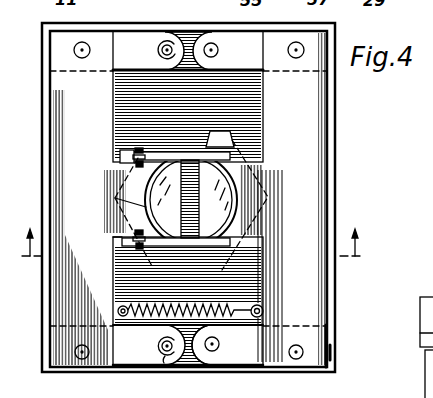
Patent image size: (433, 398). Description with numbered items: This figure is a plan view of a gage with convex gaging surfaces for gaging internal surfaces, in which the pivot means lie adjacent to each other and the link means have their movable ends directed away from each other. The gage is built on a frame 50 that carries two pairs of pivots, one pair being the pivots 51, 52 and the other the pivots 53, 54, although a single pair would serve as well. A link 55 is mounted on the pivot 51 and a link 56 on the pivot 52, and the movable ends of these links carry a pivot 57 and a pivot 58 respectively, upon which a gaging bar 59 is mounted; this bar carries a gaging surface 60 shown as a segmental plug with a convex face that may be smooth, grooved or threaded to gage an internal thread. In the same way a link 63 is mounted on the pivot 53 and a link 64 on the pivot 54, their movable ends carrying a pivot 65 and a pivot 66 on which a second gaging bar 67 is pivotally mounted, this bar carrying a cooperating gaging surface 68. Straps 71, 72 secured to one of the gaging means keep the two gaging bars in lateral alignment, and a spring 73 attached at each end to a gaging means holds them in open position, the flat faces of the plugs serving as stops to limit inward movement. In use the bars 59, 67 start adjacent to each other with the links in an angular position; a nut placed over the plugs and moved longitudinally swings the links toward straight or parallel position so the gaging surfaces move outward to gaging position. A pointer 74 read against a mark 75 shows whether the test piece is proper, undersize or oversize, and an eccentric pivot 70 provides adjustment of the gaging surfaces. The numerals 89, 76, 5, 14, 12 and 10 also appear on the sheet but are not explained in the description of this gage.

The frame 50 is at (335, 110).
The gaging means or bar 67 is at (306, 135).
The gaging means or bar 59 is at (66, 286).
The link 55 is at (188, 96).
The link 63 is at (245, 38).
The pivot 51 is at (166, 43).
The ring 89 is at (173, 42).
The pivot 53 is at (213, 42).
The pivot 57 is at (82, 59).
The pivot 65 is at (295, 60).
The upper bar 76 is at (192, 160).
The strap 71 is at (143, 152).
The link 56 is at (188, 301).
The eccentric pivot 70 is at (155, 371).
The strap 72 is at (214, 245).
The spring 73 is at (229, 307).
The pivot 52 is at (160, 344).
The link 64 is at (224, 345).
The pivot 54 is at (217, 351).
The pivot 58 is at (81, 360).
The pivot 66 is at (296, 360).
The cooperating gaging surface 68 is at (238, 188).
The gaging surface 60 is at (115, 198).
The mark or line 75 is at (330, 332).
The pointer 74 is at (332, 352).
The section line 5- 5 is at (191, 231).
The adjacent part 14 is at (420, 318).
The adjacent part 12 is at (420, 334).
The adjacent part 10 is at (425, 383).